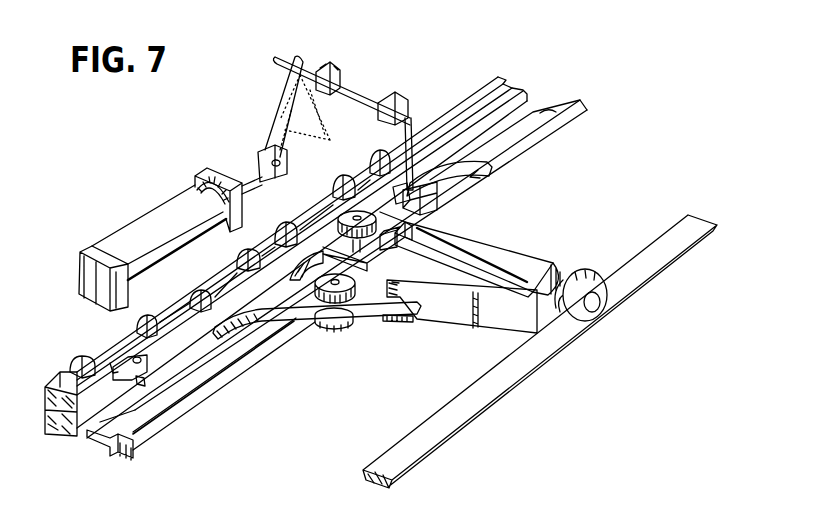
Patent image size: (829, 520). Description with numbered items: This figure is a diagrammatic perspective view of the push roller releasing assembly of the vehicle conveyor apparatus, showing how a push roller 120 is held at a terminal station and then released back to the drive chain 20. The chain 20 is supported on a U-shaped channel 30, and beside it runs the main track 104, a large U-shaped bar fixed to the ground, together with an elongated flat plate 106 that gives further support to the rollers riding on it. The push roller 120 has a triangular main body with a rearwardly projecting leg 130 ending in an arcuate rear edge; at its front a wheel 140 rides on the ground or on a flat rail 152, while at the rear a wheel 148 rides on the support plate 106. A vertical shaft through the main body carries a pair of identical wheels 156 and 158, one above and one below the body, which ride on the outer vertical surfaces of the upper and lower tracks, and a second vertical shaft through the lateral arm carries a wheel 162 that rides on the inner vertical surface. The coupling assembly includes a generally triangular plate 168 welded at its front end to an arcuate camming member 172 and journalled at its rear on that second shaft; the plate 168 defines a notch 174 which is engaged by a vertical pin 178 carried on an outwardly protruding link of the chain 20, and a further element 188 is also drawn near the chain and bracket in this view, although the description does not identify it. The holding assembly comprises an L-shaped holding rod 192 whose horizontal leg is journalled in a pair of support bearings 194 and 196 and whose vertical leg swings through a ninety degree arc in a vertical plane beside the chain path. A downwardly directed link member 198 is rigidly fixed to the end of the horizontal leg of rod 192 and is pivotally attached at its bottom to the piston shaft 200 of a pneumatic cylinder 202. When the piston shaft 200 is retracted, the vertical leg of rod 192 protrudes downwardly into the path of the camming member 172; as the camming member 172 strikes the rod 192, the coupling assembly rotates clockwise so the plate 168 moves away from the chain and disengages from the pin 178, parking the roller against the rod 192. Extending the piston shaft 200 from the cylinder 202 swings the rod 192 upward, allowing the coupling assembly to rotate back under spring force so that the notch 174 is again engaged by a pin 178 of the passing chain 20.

The drive chain 20 is at (78, 358).
The first channel 30 is at (83, 423).
The main track 104 is at (218, 383).
The flat plate 106 is at (167, 395).
The push roller 120 is at (470, 341).
The rearwardly projecting leg 130 is at (258, 302).
The wheel 140 is at (580, 320).
The wheel 148 is at (213, 222).
The flat rail 152 is at (433, 437).
The wheel 156 is at (330, 302).
The wheel 158 is at (338, 326).
The wheel 162 is at (343, 210).
The triangular plate 168 is at (440, 192).
The arcuate camming member 172 is at (470, 177).
The notch 174 is at (383, 197).
The vertical pin 178 is at (143, 385).
The pin 188 is at (128, 380).
The holding rod 192 is at (355, 90).
The support bearing 194 is at (398, 97).
The support bearing 196 is at (328, 62).
The link member 198 is at (277, 110).
The piston shaft 200 is at (248, 173).
The pneumatic cylinder 202 is at (143, 230).